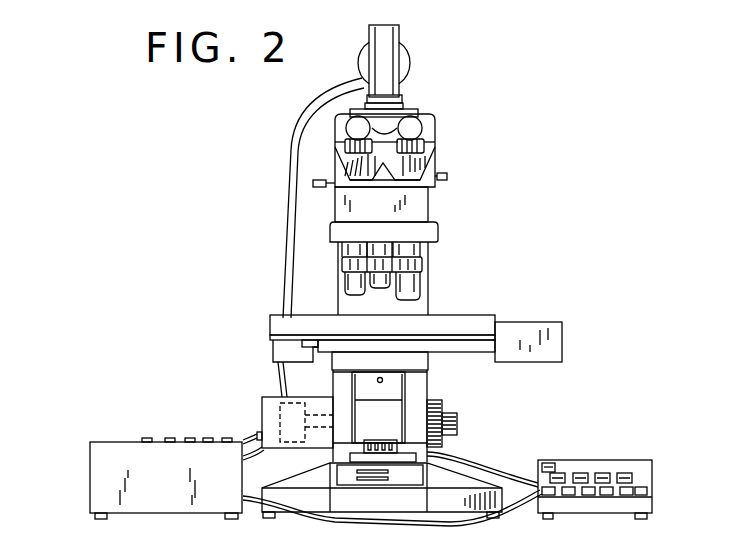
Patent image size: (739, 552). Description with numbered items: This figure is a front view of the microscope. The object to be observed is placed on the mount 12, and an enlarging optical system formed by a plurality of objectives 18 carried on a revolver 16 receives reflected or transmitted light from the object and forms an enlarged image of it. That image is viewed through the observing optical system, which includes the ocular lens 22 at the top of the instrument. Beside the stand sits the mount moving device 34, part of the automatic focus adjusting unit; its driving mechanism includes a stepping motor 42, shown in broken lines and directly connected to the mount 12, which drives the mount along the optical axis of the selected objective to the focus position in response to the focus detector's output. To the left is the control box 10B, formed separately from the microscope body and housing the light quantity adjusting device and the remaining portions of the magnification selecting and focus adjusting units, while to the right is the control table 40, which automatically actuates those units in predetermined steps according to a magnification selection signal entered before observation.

The control box 10B is at (98, 479).
The mount 12 is at (308, 317).
The revolver 16 is at (438, 228).
The objectives 18 is at (412, 282).
The ocular lens 22 is at (424, 143).
The mount moving device 34 is at (261, 423).
The control table 40 is at (647, 508).
The stepping motor 42 is at (278, 405).